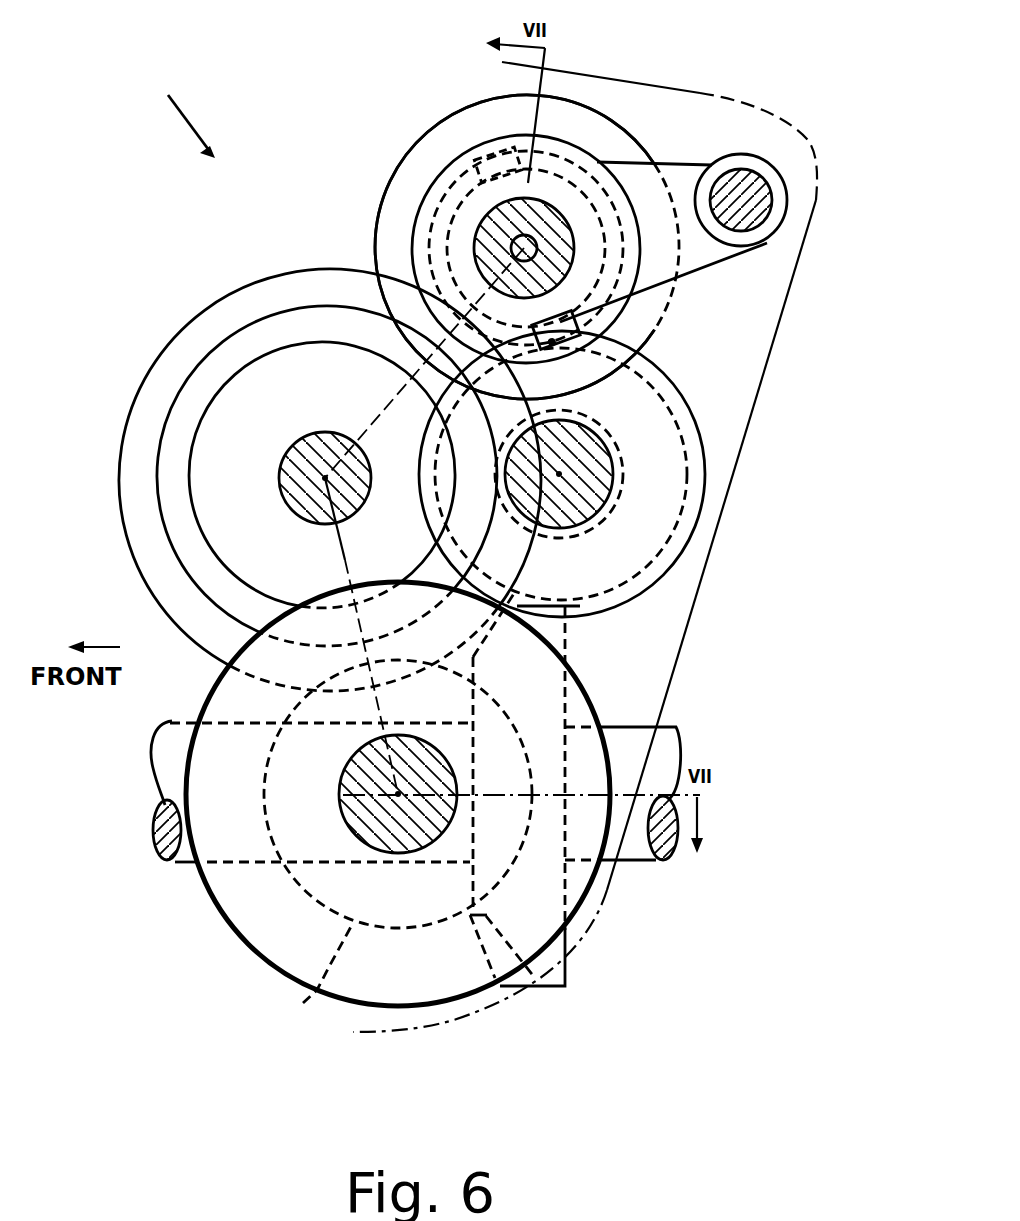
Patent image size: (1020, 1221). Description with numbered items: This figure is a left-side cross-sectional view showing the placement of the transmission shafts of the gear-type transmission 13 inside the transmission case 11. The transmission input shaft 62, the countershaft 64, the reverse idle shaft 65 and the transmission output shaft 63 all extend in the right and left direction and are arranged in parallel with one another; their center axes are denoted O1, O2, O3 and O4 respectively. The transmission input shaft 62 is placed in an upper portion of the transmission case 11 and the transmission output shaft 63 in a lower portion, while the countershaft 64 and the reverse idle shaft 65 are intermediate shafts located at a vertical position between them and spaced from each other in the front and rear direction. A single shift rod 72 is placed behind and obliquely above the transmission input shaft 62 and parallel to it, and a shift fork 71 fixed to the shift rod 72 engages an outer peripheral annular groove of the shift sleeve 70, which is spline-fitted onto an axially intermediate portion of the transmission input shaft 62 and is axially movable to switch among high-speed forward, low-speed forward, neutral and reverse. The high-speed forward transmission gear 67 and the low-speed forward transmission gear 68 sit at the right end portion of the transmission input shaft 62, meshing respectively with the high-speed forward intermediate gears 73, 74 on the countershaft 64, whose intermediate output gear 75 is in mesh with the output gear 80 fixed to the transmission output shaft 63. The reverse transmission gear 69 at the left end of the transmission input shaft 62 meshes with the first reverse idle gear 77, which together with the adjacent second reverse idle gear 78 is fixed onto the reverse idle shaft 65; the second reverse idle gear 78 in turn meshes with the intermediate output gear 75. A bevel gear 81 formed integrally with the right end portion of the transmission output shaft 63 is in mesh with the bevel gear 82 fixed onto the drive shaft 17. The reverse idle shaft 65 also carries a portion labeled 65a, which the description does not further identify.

The gear-type transmission 13 is at (185, 89).
The transmission case 11 is at (653, 80).
The drive shaft 17 is at (641, 861).
The transmission input shaft 62 is at (475, 258).
The transmission output shaft 63 is at (352, 838).
The countershaft 64 is at (284, 486).
The reverse idle shaft 65 is at (667, 567).
The pulley boss 65a is at (572, 498).
The high-speed forward transmission gear 67 is at (457, 112).
The low-speed forward transmission gear 68 is at (527, 202).
The reverse transmission gear 69 is at (412, 210).
The shift sleeve 70 is at (458, 172).
The shift fork 71 is at (660, 163).
The shift rod 72 is at (724, 157).
The high-speed forward intermediate gear 73 is at (208, 312).
The high-speed forward intermediate gear 74 is at (230, 333).
The intermediate output gear 75 is at (307, 340).
The first reverse idle gear 77 is at (683, 537).
The second reverse idle gear 78 is at (587, 515).
The output gear 80 is at (207, 877).
The bevel gear 81 is at (303, 1003).
The bevel gear 82 is at (567, 967).
The center axis of the transmission input shaft O1 is at (474, 262).
The center axis of the countershaft O2 is at (286, 455).
The center axis of the reverse idle shaft O3 is at (598, 438).
The center axis of the transmission output shaft O4 is at (394, 790).